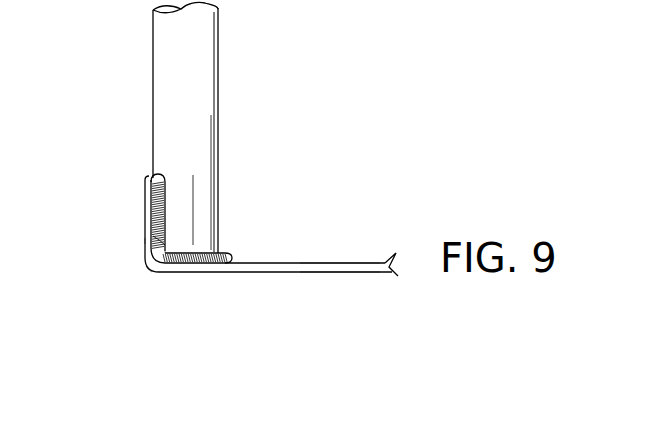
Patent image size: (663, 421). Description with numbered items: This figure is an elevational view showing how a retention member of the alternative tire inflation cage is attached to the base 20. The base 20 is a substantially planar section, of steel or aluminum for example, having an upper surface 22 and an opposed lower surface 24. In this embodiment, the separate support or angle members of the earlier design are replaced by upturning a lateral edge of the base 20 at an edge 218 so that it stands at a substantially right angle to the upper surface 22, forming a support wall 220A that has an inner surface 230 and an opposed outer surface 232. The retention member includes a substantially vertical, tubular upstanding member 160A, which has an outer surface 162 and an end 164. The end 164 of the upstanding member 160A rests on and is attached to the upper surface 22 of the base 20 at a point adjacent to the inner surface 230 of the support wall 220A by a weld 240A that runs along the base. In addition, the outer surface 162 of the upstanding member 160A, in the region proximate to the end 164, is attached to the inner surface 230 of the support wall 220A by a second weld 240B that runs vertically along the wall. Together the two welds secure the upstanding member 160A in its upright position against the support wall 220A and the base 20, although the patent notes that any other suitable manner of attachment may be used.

The upstanding member 160A is at (158, 85).
The outer surface 162 is at (202, 113).
The end 164 is at (221, 252).
The support wall 220A is at (145, 213).
The outer surface 232 is at (145, 240).
The edge 218 is at (148, 272).
The upper surface 22 is at (283, 263).
The lower surface 24 is at (285, 263).
The base 20 is at (339, 286).
The weld 240B is at (152, 176).
The weld 240A is at (221, 262).
The inner surface 230 is at (170, 240).